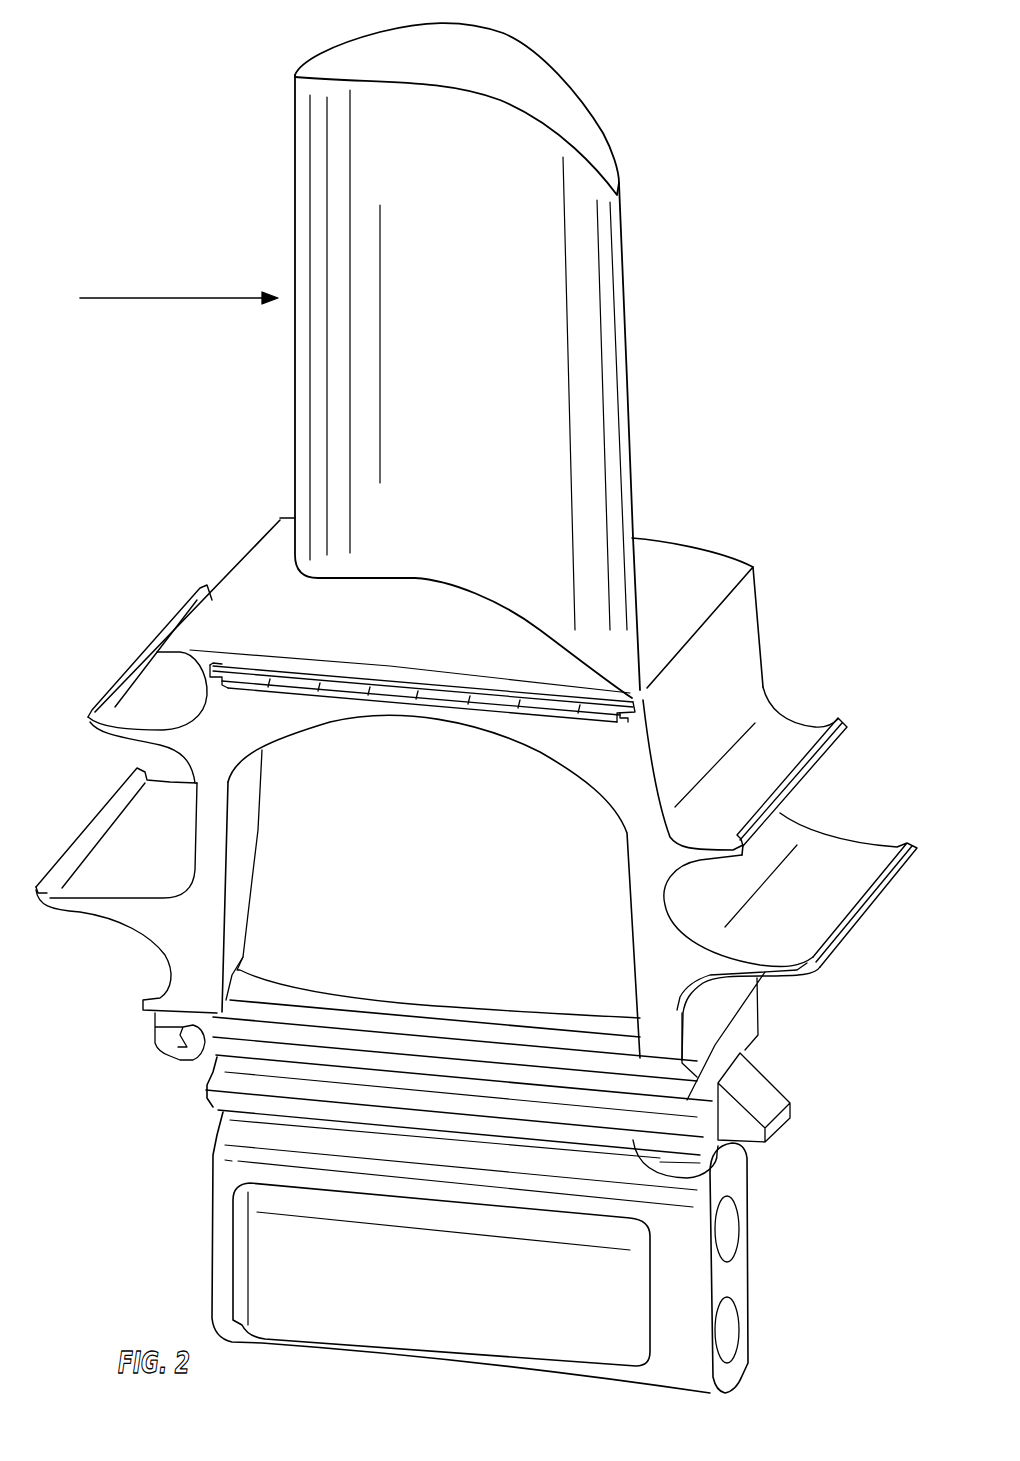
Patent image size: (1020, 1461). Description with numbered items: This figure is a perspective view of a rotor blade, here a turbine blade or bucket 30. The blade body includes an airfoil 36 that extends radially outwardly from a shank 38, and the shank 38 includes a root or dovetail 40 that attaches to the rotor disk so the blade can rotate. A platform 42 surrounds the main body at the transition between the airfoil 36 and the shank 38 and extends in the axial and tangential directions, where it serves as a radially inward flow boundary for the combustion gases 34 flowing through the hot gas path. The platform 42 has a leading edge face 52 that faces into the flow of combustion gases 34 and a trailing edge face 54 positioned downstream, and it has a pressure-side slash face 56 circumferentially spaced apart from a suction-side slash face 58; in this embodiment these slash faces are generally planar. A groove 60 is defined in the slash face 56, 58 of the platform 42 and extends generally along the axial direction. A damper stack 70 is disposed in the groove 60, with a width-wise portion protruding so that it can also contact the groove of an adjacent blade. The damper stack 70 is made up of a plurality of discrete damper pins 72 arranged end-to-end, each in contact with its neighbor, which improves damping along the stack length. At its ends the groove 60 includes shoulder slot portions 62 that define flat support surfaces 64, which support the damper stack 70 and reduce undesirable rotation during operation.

The turbine blade 30 is at (116, 508).
The combustion gases 34 is at (183, 299).
The airfoil 36 is at (403, 160).
The shank 38 is at (340, 906).
The root or dovetail 40 is at (720, 1175).
The platform 42 is at (322, 636).
The leading edge face 52 is at (145, 650).
The trailing edge face 54 is at (740, 628).
The pressure-side slash face 56 is at (637, 730).
The suction-side slash face 58 is at (677, 530).
The groove 60 is at (245, 660).
The shoulder slot portions 62 is at (215, 658).
The support surfaces 64 is at (216, 690).
The damper stack 70 is at (402, 686).
The damper pins 72 is at (448, 697).